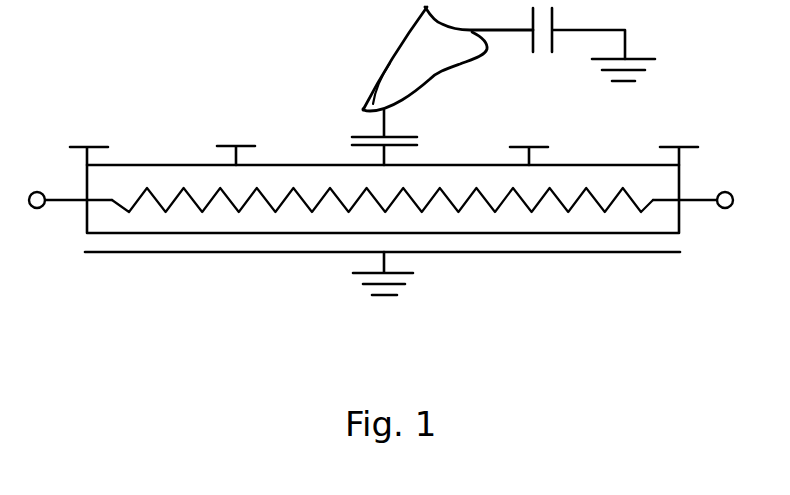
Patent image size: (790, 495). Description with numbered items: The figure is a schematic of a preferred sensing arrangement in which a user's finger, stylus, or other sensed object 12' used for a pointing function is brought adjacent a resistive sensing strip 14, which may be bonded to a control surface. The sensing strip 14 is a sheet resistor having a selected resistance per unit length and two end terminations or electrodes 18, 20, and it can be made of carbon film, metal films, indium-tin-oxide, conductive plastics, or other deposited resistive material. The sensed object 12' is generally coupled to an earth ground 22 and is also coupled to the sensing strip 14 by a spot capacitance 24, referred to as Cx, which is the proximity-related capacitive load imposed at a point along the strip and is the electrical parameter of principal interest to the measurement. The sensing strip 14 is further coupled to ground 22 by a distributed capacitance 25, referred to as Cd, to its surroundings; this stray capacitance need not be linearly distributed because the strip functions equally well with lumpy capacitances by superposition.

The sensed object 12' is at (448, 59).
The resistive sensing strip 14 is at (181, 173).
The end termination 18 is at (33, 210).
The end termination 20 is at (731, 209).
The earth ground 22 is at (640, 58).
The spot capacitance 24 is at (357, 135).
The distributed capacitance 25 is at (247, 253).